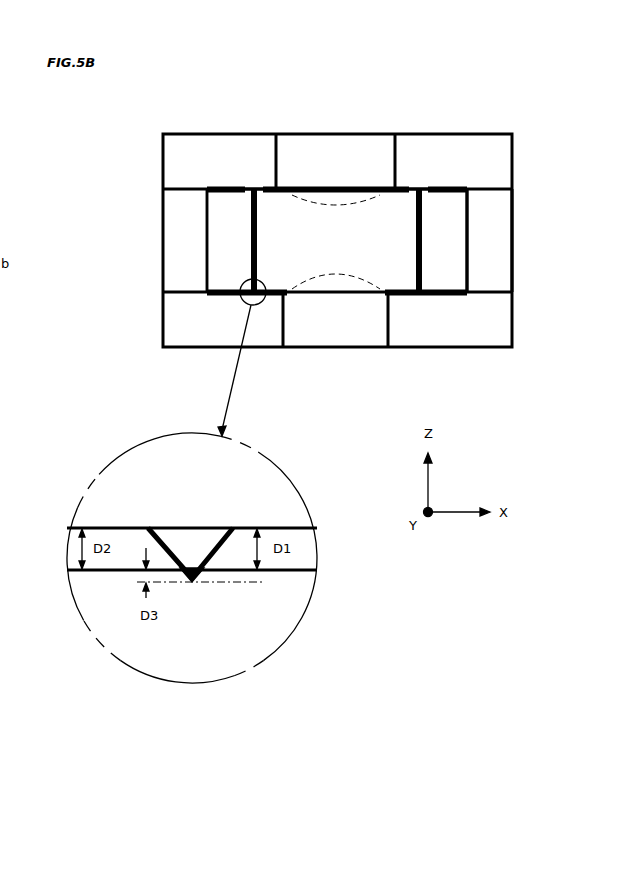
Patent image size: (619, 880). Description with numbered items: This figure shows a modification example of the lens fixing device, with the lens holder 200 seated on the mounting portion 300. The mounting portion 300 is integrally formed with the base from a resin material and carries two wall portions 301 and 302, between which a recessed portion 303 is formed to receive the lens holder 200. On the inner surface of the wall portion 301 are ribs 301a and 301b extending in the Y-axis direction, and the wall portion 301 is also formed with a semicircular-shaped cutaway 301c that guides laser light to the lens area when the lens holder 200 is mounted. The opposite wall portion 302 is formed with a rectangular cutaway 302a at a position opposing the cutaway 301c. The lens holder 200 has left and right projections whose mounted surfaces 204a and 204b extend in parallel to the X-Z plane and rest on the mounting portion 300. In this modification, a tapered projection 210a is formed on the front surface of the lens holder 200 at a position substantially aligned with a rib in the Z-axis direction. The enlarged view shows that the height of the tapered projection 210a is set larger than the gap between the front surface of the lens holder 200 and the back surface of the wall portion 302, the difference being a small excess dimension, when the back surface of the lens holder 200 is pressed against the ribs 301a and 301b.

The mounting portion 300 is at (205, 132).
The wall portion 301 is at (490, 142).
The rib 301a is at (250, 185).
The rib 301b is at (420, 185).
The semicircular-shaped cutaway 301c is at (338, 152).
The lens holder 200 is at (212, 248).
The mounted surface 204a is at (228, 273).
The mounted surface 204b is at (440, 277).
The wall portion 302 is at (495, 335).
The rectangular cutaway 302a is at (338, 325).
The recessed portion 303 is at (498, 243).
The tapered projection 210a is at (192, 540).